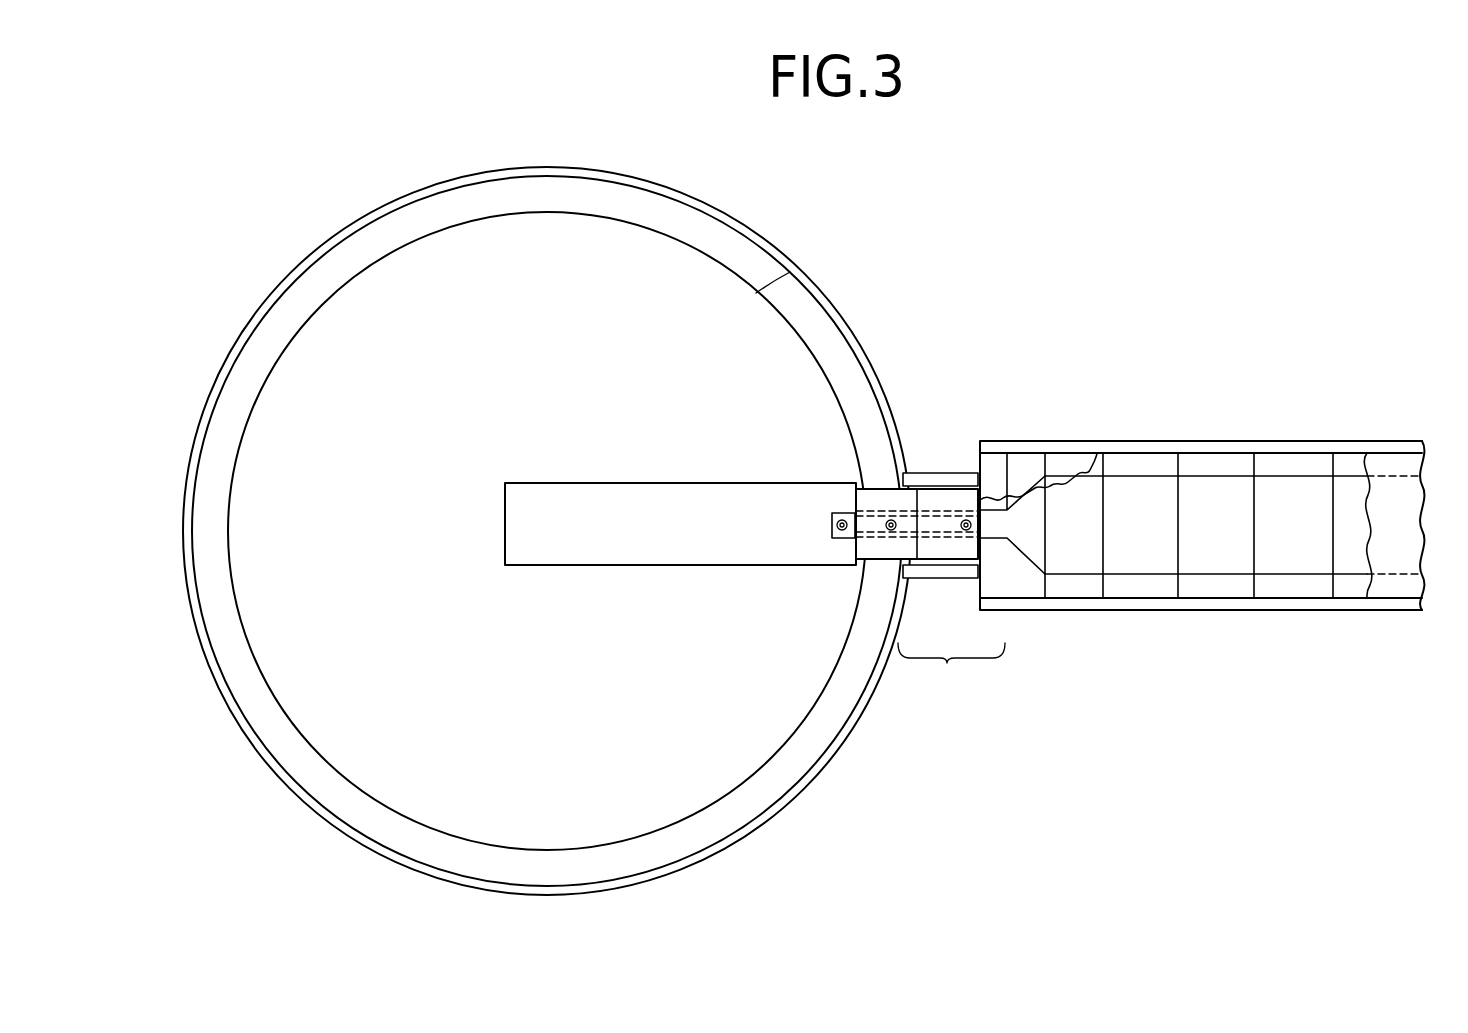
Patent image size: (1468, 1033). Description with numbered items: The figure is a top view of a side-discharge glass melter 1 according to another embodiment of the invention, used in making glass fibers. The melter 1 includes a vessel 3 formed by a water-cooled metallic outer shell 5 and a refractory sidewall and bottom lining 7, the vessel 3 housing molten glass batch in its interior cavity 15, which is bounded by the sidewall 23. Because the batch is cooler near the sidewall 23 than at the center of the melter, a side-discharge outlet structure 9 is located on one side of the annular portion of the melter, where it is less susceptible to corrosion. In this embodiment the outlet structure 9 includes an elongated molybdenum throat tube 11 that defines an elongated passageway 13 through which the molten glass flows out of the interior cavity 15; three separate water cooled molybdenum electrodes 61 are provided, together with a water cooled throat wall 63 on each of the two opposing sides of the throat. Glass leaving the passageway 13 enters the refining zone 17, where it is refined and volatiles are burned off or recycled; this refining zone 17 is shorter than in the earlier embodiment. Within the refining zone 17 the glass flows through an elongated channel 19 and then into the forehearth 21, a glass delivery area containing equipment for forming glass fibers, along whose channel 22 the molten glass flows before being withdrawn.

The melter 1 is at (803, 531).
The vessel 3 is at (858, 709).
The outer shell 5 is at (838, 735).
The refractory sidewall and bottom lining 7 is at (323, 287).
The side-discharge outlet structure 9 is at (879, 514).
The throat tube 11 is at (868, 548).
The elongated passageway 13 is at (867, 518).
The interior cavity 15 is at (560, 392).
The refining zone 17 is at (951, 673).
The elongated channel 19 is at (1202, 550).
The forehearth 21 is at (1202, 489).
The channel 22 is at (1122, 500).
The sidewall 23 is at (756, 293).
The water cooled molybdenum electrodes 61 is at (885, 530).
The water cooled throat wall 63 is at (957, 450).